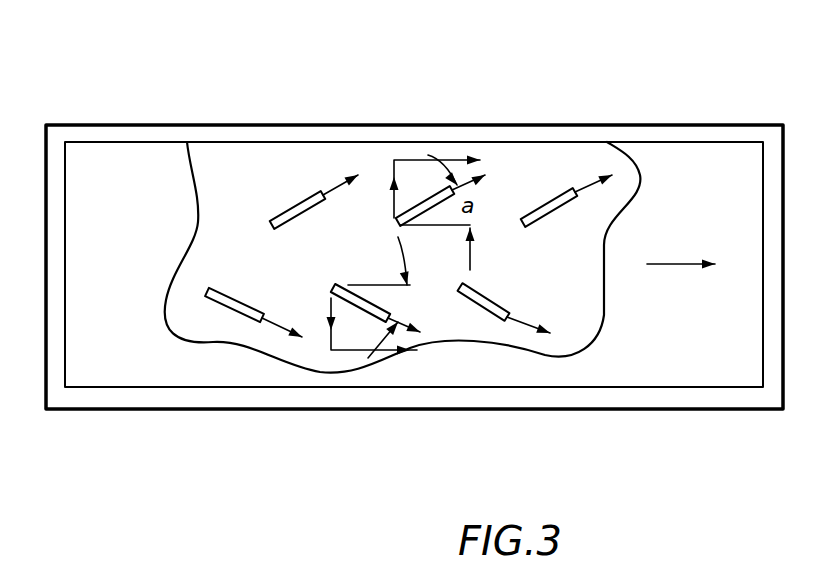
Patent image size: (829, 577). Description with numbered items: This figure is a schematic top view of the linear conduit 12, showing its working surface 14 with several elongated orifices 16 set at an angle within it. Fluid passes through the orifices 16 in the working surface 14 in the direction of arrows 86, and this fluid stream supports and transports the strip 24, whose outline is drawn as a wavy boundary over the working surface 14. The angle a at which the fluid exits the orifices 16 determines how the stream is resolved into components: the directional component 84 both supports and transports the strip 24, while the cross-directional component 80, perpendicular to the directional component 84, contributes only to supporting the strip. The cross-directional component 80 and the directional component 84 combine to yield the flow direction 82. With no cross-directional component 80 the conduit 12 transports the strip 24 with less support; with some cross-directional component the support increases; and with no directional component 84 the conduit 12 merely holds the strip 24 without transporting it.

The conduit 12 is at (660, 102).
The working surface 14 is at (263, 148).
The orifices 16 is at (285, 210).
The strip 24 is at (222, 372).
The cross-directional component 80 is at (331, 298).
The flow direction 82 is at (393, 305).
The directional component 84 is at (352, 350).
The arrows 86 is at (522, 323).